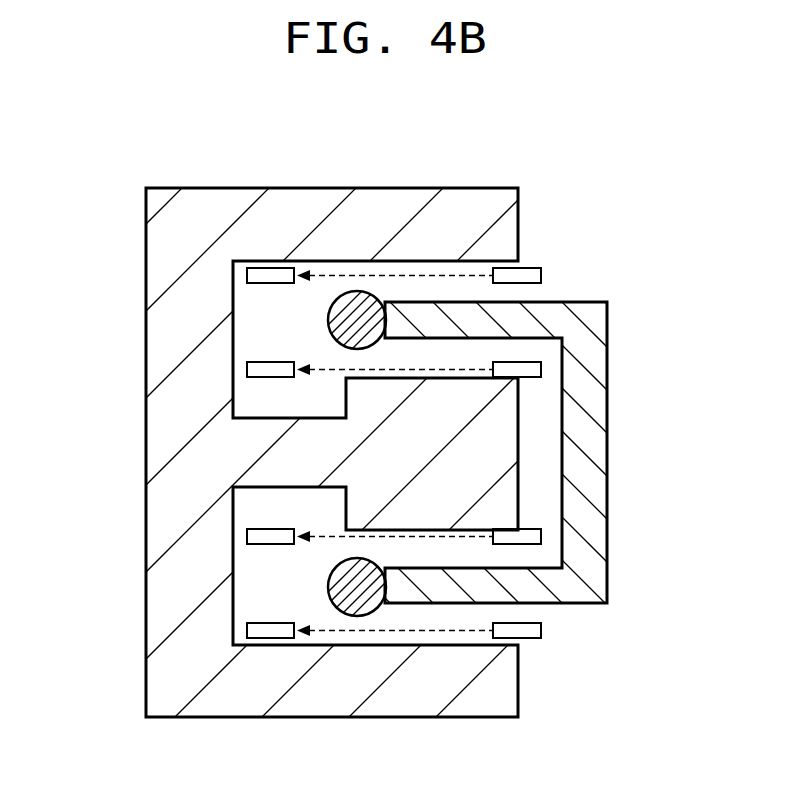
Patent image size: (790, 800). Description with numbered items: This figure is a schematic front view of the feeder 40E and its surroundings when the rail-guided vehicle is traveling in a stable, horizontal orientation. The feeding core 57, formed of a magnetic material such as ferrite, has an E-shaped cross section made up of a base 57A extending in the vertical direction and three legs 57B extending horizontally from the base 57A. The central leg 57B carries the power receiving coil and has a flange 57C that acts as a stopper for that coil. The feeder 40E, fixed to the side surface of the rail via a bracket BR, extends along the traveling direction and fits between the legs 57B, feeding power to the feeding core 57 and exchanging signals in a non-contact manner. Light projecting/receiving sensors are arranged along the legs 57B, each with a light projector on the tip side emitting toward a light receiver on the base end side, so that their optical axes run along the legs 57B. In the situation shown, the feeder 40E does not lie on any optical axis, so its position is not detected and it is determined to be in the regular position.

The feeding core 57 is at (395, 443).
The base 57A is at (187, 413).
The leg 57B is at (386, 215).
The flange 57C is at (485, 448).
The bracket BR is at (592, 565).
The feeder 40E is at (348, 314).